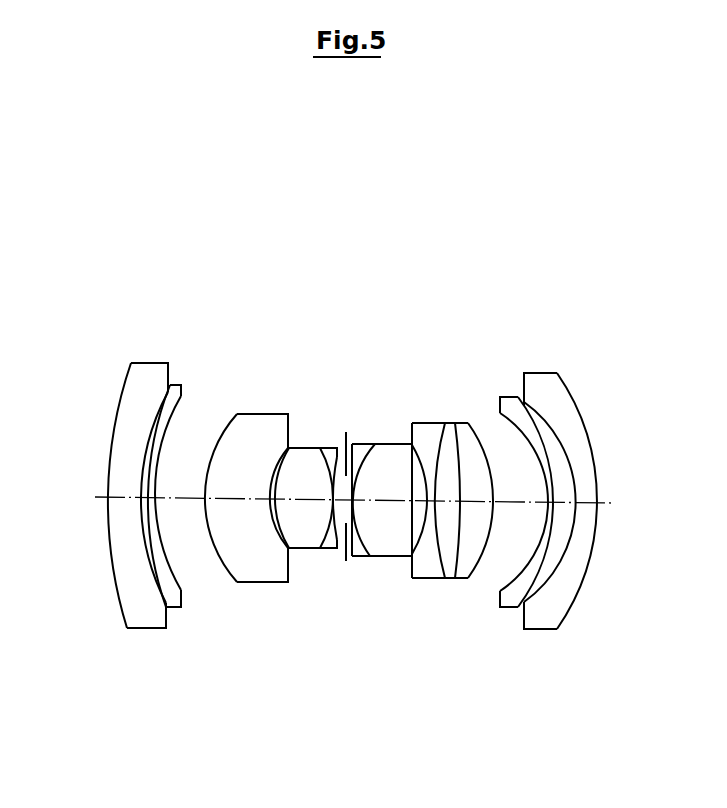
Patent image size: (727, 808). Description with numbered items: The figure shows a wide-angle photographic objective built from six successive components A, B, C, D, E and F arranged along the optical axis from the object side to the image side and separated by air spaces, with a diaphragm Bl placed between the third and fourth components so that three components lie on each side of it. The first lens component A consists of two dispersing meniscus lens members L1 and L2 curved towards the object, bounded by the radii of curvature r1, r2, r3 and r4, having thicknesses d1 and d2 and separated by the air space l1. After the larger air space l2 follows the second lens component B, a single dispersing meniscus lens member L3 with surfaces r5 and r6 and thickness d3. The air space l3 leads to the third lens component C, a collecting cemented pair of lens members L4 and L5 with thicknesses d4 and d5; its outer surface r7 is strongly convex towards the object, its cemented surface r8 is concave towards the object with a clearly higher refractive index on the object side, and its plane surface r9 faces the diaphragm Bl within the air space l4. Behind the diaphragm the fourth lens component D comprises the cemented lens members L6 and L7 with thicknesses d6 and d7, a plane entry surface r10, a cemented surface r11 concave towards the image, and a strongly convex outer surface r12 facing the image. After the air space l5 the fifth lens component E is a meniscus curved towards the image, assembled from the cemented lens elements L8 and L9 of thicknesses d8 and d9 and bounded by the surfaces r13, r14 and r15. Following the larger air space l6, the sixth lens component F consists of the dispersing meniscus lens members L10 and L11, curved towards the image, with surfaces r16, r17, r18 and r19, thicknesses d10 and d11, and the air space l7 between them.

The first lens component A is at (132, 160).
The second lens component B is at (197, 163).
The third lens component C is at (310, 160).
The fourth lens component D is at (415, 160).
The fifth lens component E is at (520, 160).
The sixth lens component F is at (660, 160).
The diaphragm Bl is at (348, 431).
The dispersing meniscus lens member L1 is at (53, 223).
The dispersing meniscus lens member L2 is at (124, 223).
The dispersing lens member L3 is at (195, 223).
The lens member L4 is at (265, 223).
The lens member L5 is at (300, 223).
The lens member L6 is at (372, 223).
The lens member L7 is at (405, 223).
The lens element L8 is at (477, 223).
The lens element L9 is at (512, 223).
The lens member L10 is at (586, 223).
The lens member L11 is at (654, 223).
The radius of curvature r1 is at (113, 590).
The radius of curvature r2 is at (147, 592).
The radius of curvature r3 is at (163, 595).
The radius of curvature r4 is at (178, 597).
The radius of curvature r5 is at (217, 560).
The radius of curvature r6 is at (262, 548).
The radius of curvature r7 is at (285, 545).
The radius of curvature r8 is at (321, 548).
The radius of curvature r9 is at (334, 545).
The radius of curvature r10 is at (354, 556).
The radius of curvature r11 is at (367, 556).
The radius of curvature r12 is at (422, 530).
The radius of curvature r13 is at (441, 560).
The radius of curvature r14 is at (452, 578).
The radius of curvature r15 is at (482, 567).
The radius of curvature r16 is at (505, 598).
The radius of curvature r17 is at (521, 597).
The radius of curvature r18 is at (548, 580).
The radius of curvature r19 is at (578, 590).
The lens thickness d1 is at (110, 497).
The lens thickness d2 is at (147, 497).
The lens thickness d3 is at (243, 498).
The lens thickness d4 is at (290, 499).
The lens thickness d5 is at (310, 499).
The lens thickness d6 is at (352, 500).
The lens thickness d7 is at (388, 500).
The lens thickness d8 is at (437, 500).
The lens thickness d9 is at (468, 500).
The lens thickness d10 is at (550, 501).
The lens thickness d11 is at (592, 502).
The air space l1 is at (130, 497).
The air space l2 is at (188, 498).
The air space l3 is at (275, 498).
The air space l4 is at (345, 499).
The air space l5 is at (428, 500).
The air space l6 is at (518, 501).
The air space l7 is at (570, 502).